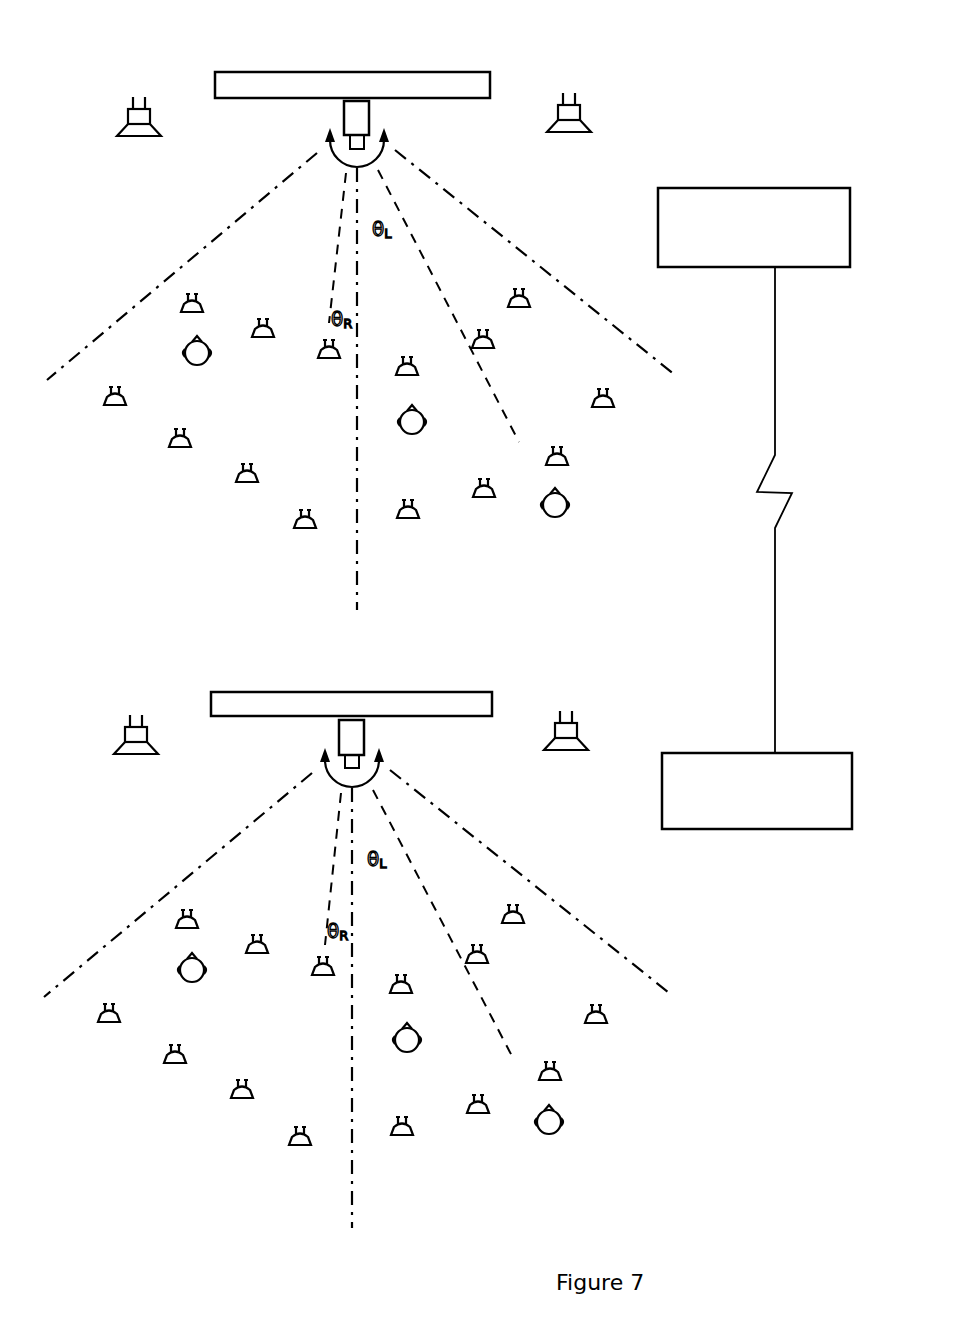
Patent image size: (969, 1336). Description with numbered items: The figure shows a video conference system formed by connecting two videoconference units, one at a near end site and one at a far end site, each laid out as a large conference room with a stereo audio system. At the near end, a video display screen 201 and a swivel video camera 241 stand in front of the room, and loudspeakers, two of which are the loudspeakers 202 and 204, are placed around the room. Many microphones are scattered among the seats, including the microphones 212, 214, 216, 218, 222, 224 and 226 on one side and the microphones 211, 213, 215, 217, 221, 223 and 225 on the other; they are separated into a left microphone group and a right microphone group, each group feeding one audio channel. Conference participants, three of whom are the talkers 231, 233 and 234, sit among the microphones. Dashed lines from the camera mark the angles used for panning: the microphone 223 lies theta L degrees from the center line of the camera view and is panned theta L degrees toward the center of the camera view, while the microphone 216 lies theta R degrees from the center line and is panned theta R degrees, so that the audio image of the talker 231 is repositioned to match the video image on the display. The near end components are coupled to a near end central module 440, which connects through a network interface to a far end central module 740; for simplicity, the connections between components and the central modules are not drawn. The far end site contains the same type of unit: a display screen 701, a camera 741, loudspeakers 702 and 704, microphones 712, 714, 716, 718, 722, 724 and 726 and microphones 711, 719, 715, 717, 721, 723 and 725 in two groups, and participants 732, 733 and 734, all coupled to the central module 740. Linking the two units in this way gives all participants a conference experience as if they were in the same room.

The video display screen 201 is at (445, 72).
The loudspeaker 202 is at (145, 97).
The loudspeaker 204 is at (575, 93).
The camera / sensor with sweep arc 241 is at (343, 118).
The microphone 211 is at (407, 380).
The microphone 212 is at (195, 297).
The microphone 213 is at (483, 353).
The microphone 214 is at (263, 322).
The microphone 215 is at (518, 313).
The microphone 216 is at (330, 363).
The microphone 217 is at (408, 523).
The microphone 218 is at (115, 410).
The microphone 221 is at (483, 502).
The microphone 222 is at (180, 452).
The microphone 223 is at (557, 470).
The microphone 224 is at (247, 487).
The microphone 225 is at (603, 412).
The microphone 226 is at (300, 533).
The conference participant 231 is at (555, 518).
The conference participant 233 is at (412, 435).
The viewer 234 is at (200, 366).
The near end central module 440 is at (815, 267).
The display screen 701 is at (443, 692).
The left loudspeaker 702 is at (142, 715).
The right loudspeaker 704 is at (572, 711).
The camera / sensor with sweep arc 741 is at (338, 738).
The seat 711 is at (401, 998).
The seat 712 is at (190, 913).
The seat 714 is at (258, 938).
The seat 715 is at (512, 928).
The seat 716 is at (325, 980).
The seat 717 is at (402, 1140).
The seat 718 is at (109, 1027).
The seat 719 is at (477, 968).
The seat 721 is at (478, 1118).
The seat 722 is at (175, 1068).
The seat 723 is at (550, 1085).
The seat 724 is at (242, 1103).
The seat 725 is at (596, 1028).
The seat 726 is at (296, 1150).
The viewer 732 is at (549, 1135).
The viewer 733 is at (407, 1053).
The viewer 734 is at (195, 983).
The far end central module 740 is at (797, 829).